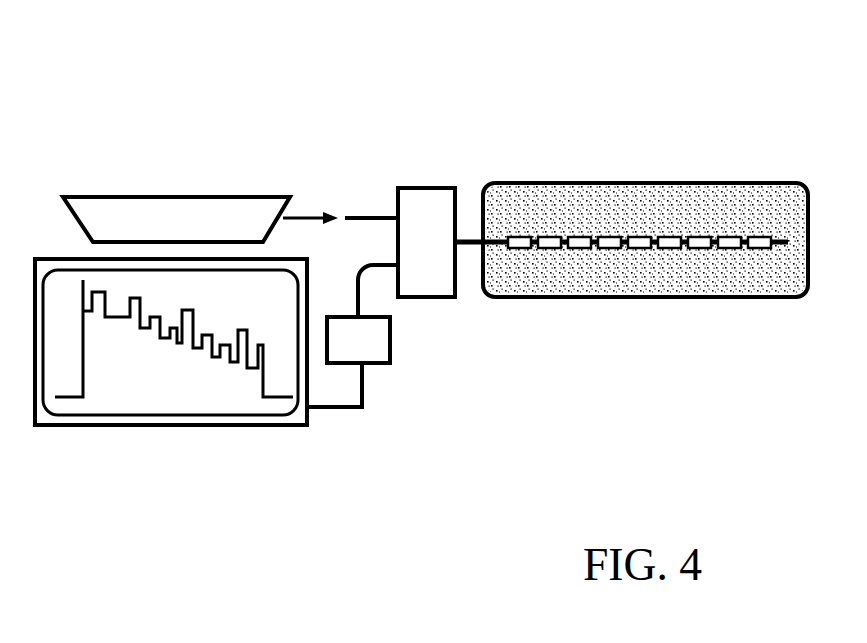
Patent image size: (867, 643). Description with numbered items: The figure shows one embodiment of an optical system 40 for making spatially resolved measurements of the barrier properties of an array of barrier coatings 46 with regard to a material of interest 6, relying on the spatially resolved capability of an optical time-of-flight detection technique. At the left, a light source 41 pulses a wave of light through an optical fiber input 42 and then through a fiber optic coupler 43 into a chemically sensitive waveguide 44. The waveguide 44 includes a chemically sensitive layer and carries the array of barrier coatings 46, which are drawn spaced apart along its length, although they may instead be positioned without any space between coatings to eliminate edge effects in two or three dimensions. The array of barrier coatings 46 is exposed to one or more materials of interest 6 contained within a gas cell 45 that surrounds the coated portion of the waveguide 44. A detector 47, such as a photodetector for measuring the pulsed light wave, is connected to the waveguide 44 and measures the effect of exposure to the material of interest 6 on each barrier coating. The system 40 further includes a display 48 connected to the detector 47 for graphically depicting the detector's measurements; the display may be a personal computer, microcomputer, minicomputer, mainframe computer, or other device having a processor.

The optical system 40 is at (551, 455).
The light source 41 is at (178, 215).
The optical fiber input 42 is at (360, 213).
The fiber optic coupler 43 is at (427, 217).
The chemically sensitive waveguide 44 is at (467, 240).
The gas cell 45 is at (647, 185).
The material of interest 6 is at (705, 207).
The array of barrier coatings 46 is at (628, 264).
The detector 47 is at (360, 343).
The display 48 is at (168, 427).